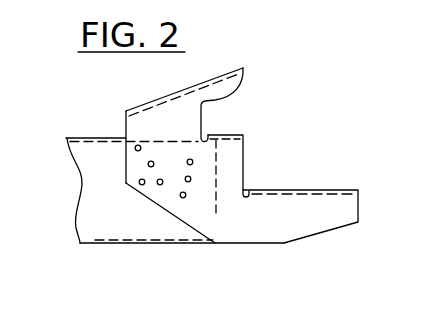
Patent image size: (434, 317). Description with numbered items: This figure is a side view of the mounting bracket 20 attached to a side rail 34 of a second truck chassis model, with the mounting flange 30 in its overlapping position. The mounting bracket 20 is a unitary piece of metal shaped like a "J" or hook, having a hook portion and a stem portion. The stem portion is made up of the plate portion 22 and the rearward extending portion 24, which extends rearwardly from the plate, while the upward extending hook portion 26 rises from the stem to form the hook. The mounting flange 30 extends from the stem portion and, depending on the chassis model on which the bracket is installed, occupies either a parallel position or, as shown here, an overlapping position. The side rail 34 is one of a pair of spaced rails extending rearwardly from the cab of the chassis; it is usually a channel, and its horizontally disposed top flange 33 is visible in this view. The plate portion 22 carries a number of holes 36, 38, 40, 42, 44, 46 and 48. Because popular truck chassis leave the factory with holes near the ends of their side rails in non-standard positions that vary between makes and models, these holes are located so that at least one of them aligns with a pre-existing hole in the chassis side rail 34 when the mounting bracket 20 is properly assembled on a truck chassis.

The mounting bracket 20 is at (327, 258).
The plate portion 22 is at (202, 213).
The rearward extending portion 24 is at (340, 215).
The upward extending hook portion 26 is at (236, 97).
The mounting flange 30 is at (224, 136).
The top flange 33 is at (78, 137).
The side rail 34 is at (100, 228).
The hole 36 is at (137, 145).
The hole 38 is at (148, 165).
The hole 40 is at (139, 184).
The hole 42 is at (162, 187).
The hole 44 is at (193, 161).
The hole 46 is at (191, 181).
The hole 48 is at (183, 198).